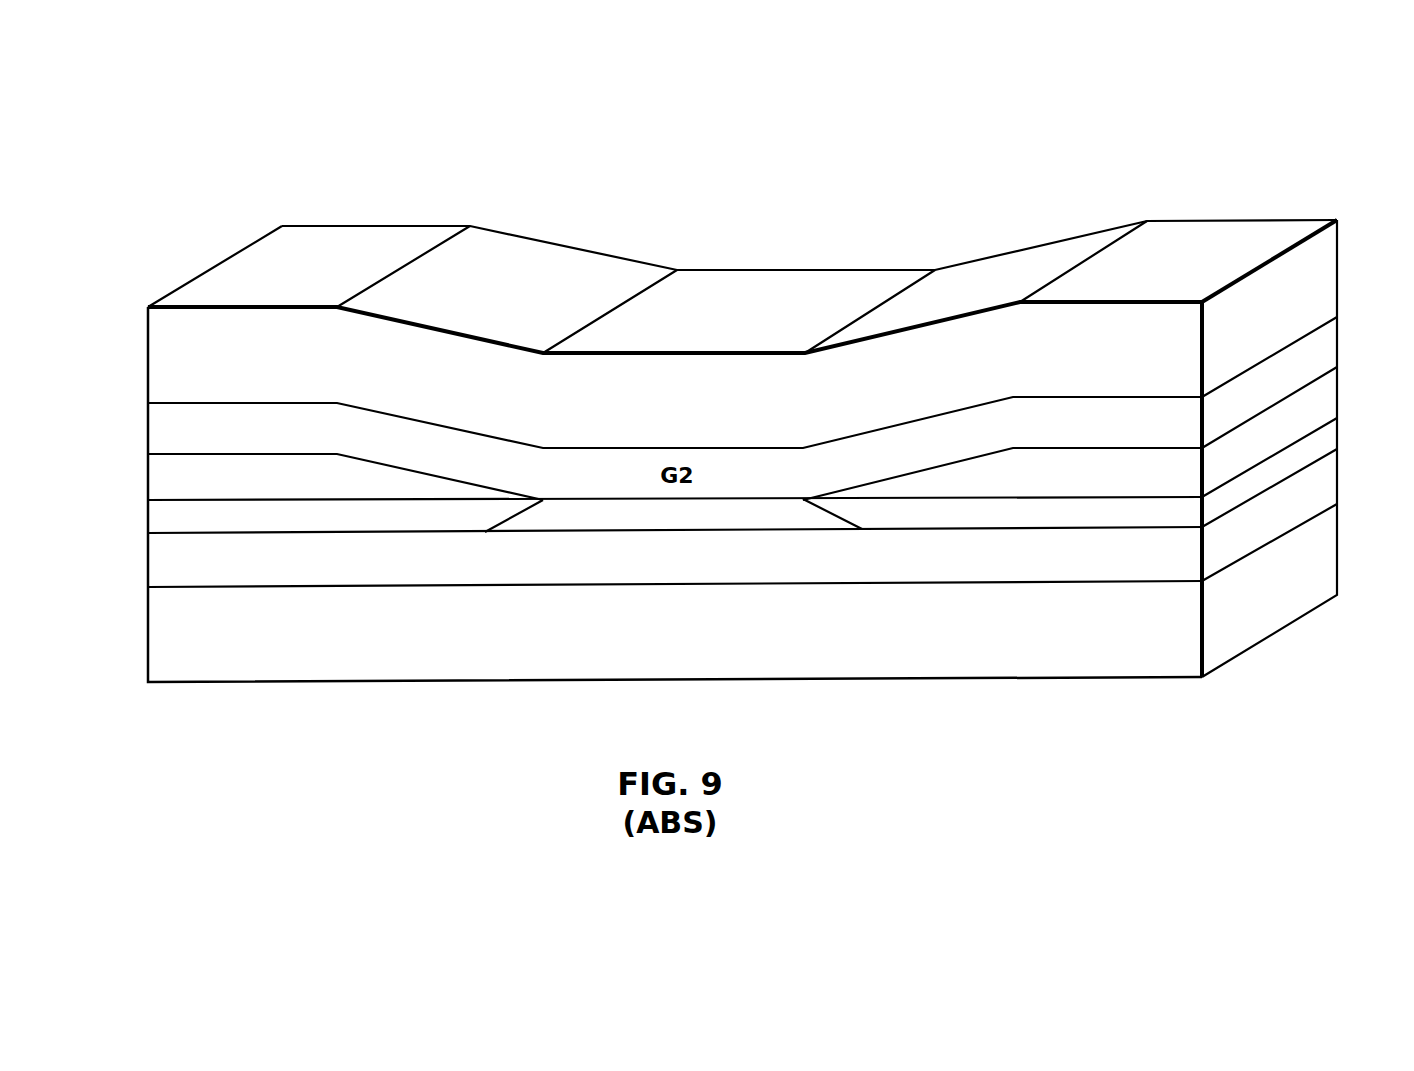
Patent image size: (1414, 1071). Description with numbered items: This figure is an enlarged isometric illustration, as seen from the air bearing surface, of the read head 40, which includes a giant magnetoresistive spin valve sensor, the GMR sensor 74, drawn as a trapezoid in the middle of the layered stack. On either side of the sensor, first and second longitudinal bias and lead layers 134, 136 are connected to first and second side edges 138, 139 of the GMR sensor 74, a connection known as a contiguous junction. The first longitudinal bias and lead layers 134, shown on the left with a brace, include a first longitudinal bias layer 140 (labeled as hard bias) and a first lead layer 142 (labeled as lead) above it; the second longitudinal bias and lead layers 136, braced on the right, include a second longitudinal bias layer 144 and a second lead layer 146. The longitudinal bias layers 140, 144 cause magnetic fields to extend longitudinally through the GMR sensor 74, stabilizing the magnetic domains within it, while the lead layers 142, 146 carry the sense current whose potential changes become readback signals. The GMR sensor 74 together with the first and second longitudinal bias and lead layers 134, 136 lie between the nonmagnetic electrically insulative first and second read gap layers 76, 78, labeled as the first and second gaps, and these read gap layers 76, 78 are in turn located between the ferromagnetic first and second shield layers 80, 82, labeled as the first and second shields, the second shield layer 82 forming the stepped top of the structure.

The read head 40 is at (805, 238).
The second shield layer 82 is at (577, 268).
The second read gap layer 78 is at (437, 438).
The GMR sensor 74 is at (580, 499).
The first read gap layer 76 is at (538, 572).
The first shield layer 80 is at (264, 660).
The first longitudinal bias and lead layers 134 is at (140, 457).
The second longitudinal bias and lead layers 136 is at (1349, 364).
The first side edge 138 is at (505, 518).
The second side edge 139 is at (845, 515).
The first longitudinal bias layer 140 is at (177, 515).
The first lead layer 142 is at (178, 475).
The second longitudinal bias layer 144 is at (1138, 510).
The second lead layer 146 is at (1143, 473).